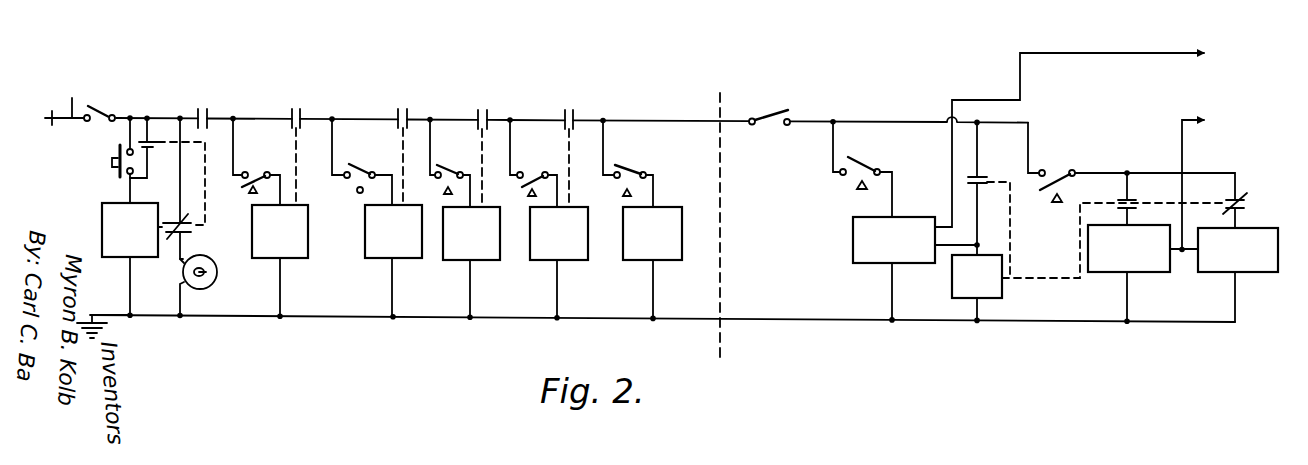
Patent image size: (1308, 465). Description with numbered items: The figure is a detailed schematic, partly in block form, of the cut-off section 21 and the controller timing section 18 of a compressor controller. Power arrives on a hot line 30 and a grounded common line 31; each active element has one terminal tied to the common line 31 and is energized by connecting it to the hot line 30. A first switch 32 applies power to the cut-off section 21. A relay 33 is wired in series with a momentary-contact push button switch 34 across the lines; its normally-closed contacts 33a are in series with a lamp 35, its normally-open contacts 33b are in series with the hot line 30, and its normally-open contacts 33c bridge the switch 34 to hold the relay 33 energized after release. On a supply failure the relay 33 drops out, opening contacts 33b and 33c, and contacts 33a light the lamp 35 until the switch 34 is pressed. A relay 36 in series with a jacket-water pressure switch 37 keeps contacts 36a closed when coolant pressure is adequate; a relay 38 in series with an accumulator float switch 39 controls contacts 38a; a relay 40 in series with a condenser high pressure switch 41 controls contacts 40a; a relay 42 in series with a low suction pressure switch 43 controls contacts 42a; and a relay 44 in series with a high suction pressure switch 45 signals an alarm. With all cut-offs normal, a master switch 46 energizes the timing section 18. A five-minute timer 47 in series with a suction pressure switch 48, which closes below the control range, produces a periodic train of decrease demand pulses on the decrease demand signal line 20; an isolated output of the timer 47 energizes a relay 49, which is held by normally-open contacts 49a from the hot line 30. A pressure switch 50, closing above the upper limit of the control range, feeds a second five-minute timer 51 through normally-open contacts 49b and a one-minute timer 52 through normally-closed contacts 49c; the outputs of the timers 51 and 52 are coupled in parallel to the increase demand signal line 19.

The controller timing section 18 is at (790, 74).
The increase demand signal line 19 is at (1190, 117).
The decrease demand signal line 20 is at (1090, 53).
The cut-off section 21 is at (610, 100).
The hot line 30 is at (67, 100).
The common line 31 is at (112, 313).
The first switch 32 is at (106, 101).
The relay 33 is at (109, 203).
The normally-closed contacts 33a is at (180, 220).
The normally-open contacts 33b is at (212, 115).
The normally-open contacts 33c is at (153, 140).
The momentary-contact push button switch 34 is at (110, 154).
The lamp 35 is at (210, 284).
The relay 36 is at (298, 259).
The normally open contacts 36a is at (302, 115).
The pressure switch 37 is at (259, 169).
The relay 38 is at (412, 259).
The normally open contacts 38a is at (408, 115).
The float switch 39 is at (366, 168).
The relay 40 is at (490, 261).
The normally-open contacts 40a is at (485, 112).
The pressure switch 41 is at (455, 162).
The relay 42 is at (577, 261).
The normally open contacts 42a is at (571, 112).
The pressure switch 43 is at (535, 167).
The relay 44 is at (668, 261).
The pressure switch 45 is at (641, 165).
The master switch 46 is at (775, 128).
The five-minute timer 47 is at (918, 217).
The pressure switch 48 is at (877, 160).
The relay 49 is at (1003, 294).
The normally open contacts 49a is at (982, 177).
The normally open contacts 49b is at (1133, 198).
The normally closed contacts 49c is at (1247, 203).
The pressure switch 50 is at (1070, 166).
The second five-minute timer 51 is at (1153, 272).
The one-minute timer 52 is at (1255, 272).